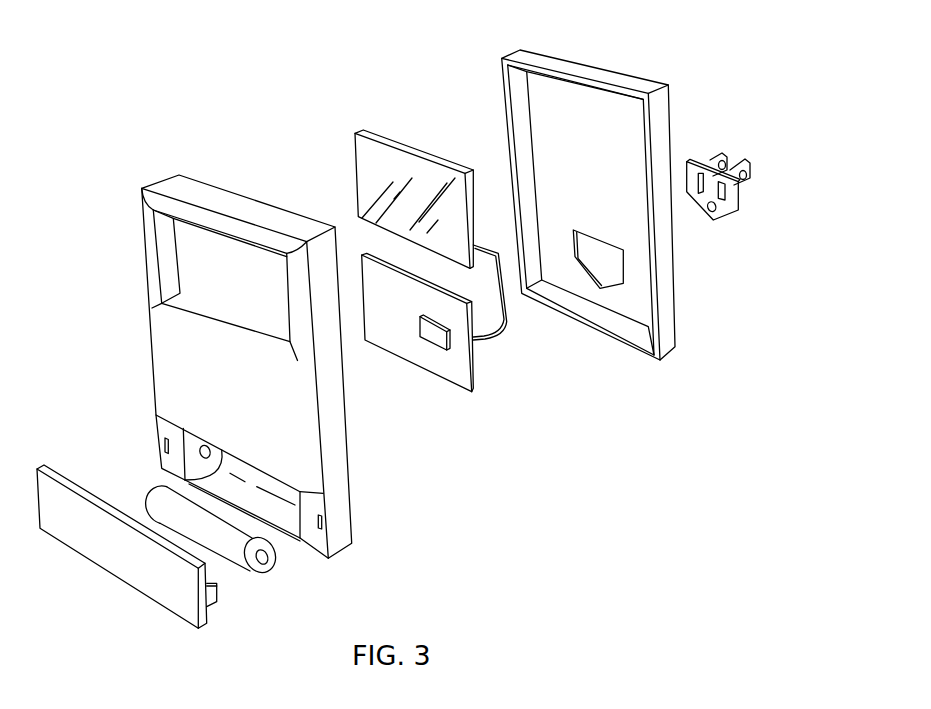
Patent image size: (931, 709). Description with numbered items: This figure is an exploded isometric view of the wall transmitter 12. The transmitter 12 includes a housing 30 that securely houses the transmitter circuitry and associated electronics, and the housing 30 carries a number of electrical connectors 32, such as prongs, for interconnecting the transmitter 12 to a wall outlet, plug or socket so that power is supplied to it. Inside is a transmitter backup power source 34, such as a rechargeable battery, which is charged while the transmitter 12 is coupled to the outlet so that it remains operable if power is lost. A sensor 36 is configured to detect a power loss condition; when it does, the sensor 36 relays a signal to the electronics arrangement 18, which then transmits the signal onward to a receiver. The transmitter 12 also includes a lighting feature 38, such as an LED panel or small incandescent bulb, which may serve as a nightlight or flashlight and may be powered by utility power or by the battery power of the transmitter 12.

The transmitter 12 is at (118, 207).
The electronics arrangement 18 is at (430, 362).
The housing 30 is at (577, 113).
The electrical connectors 32 is at (725, 198).
The transmitter backup power source 34 is at (265, 557).
The sensor 36 is at (432, 330).
The lighting feature 38 is at (378, 175).